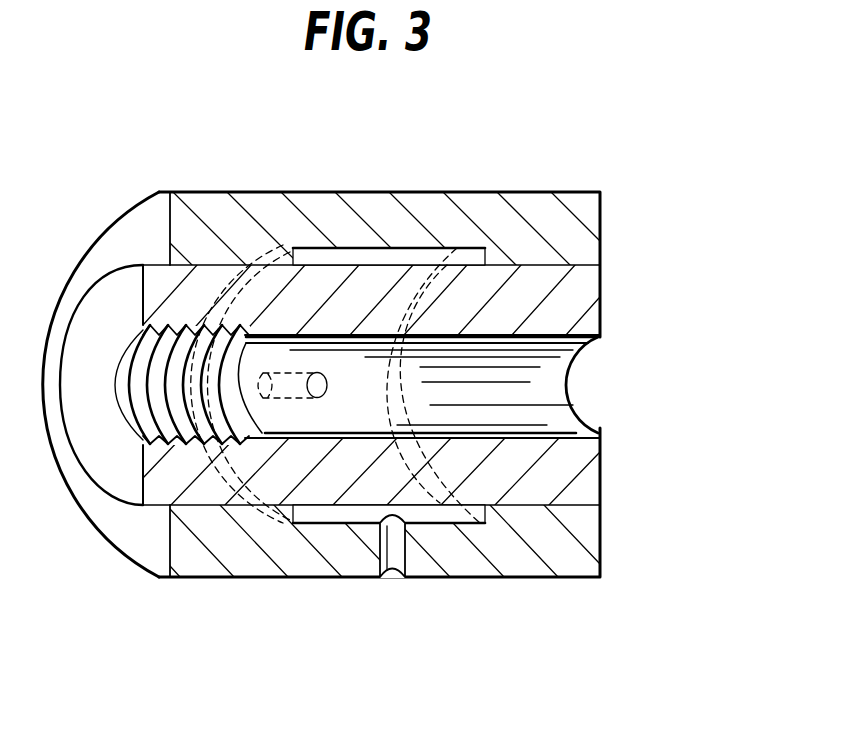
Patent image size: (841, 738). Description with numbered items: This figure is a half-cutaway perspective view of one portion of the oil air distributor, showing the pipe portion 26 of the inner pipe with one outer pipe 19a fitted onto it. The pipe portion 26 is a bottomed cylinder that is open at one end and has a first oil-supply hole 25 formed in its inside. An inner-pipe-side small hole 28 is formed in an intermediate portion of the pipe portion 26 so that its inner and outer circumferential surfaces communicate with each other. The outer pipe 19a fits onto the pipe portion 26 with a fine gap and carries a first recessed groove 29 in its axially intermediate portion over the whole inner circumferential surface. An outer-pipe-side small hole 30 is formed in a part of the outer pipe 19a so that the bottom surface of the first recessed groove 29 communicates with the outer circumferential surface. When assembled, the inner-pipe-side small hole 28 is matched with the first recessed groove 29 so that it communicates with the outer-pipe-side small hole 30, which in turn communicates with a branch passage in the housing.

The outer pipe 19a is at (530, 205).
The first oil-supply hole 25 is at (585, 430).
The pipe portion 26 is at (572, 312).
The inner-pipe-side small hole 28 is at (327, 391).
The first recessed groove 29 is at (370, 250).
The outer-pipe-side small hole 30 is at (405, 545).